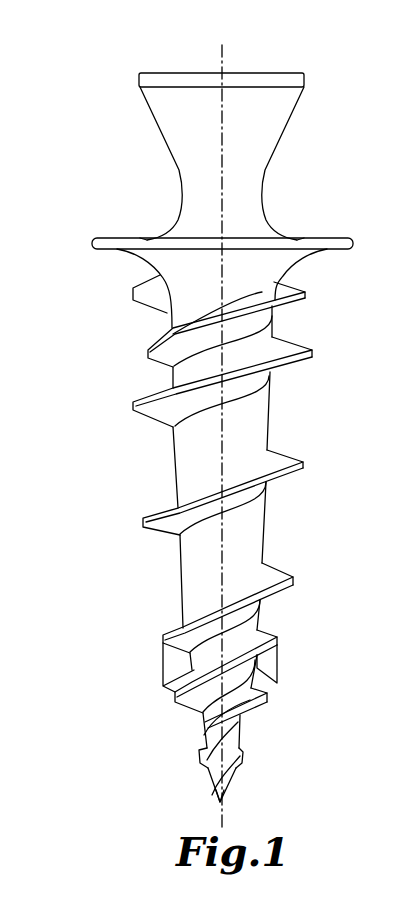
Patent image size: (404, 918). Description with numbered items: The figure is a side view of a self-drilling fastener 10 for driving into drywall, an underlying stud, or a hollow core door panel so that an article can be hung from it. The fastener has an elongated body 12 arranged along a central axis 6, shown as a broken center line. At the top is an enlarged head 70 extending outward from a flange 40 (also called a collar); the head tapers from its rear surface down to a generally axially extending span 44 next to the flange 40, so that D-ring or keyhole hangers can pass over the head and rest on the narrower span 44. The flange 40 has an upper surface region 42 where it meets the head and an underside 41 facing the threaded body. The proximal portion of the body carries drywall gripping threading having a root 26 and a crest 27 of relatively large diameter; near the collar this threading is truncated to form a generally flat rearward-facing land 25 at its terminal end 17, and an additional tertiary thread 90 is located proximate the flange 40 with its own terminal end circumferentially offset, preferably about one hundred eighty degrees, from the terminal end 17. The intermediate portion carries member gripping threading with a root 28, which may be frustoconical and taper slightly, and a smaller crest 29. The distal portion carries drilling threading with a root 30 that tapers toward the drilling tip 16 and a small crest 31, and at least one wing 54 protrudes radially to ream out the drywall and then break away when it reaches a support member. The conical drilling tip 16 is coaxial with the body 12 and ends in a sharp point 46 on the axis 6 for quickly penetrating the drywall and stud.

The axis 6 is at (224, 52).
The self-drilling fastener 10 is at (319, 120).
The head 70 is at (173, 131).
The span 44 is at (262, 210).
The flange 40 is at (102, 242).
The flange top surface 42 is at (125, 236).
The underside 41 is at (100, 250).
The terminal end 17 is at (153, 302).
The flat rearward-facing land 25 is at (133, 292).
The tertiary thread 90 is at (297, 288).
The root 26 is at (275, 322).
The crest 27 is at (312, 353).
The elongated body 12 is at (263, 413).
The root 28 is at (263, 612).
The crest 29 is at (163, 635).
The wing 54 is at (163, 668).
The crest 31 is at (263, 695).
The root 30 is at (210, 733).
The drilling tip 16 is at (210, 783).
The point 46 is at (224, 803).